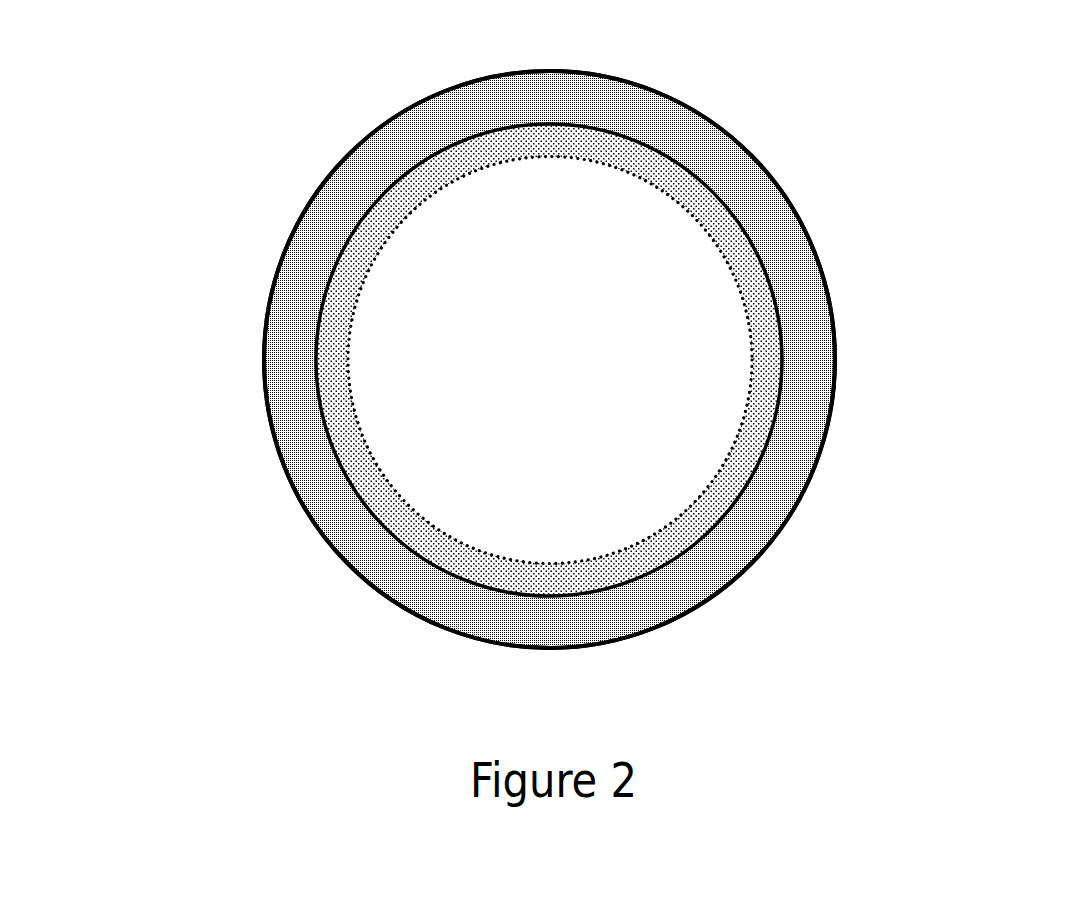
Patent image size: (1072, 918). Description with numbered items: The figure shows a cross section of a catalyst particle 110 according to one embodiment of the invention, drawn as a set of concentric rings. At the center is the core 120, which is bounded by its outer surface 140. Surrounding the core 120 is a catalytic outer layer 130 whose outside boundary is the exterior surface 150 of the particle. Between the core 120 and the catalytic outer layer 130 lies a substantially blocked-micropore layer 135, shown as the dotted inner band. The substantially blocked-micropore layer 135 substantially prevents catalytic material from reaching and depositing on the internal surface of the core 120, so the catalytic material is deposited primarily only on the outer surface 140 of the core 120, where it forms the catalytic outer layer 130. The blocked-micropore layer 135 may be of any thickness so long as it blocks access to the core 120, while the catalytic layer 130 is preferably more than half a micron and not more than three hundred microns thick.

The catalyst particle 110 is at (368, 135).
The core 120 is at (583, 483).
The catalytic outer layer 130 is at (302, 405).
The substantially blocked-micropore layer 135 is at (400, 522).
The outer surface 140 is at (768, 265).
The exterior surface 150 is at (733, 135).